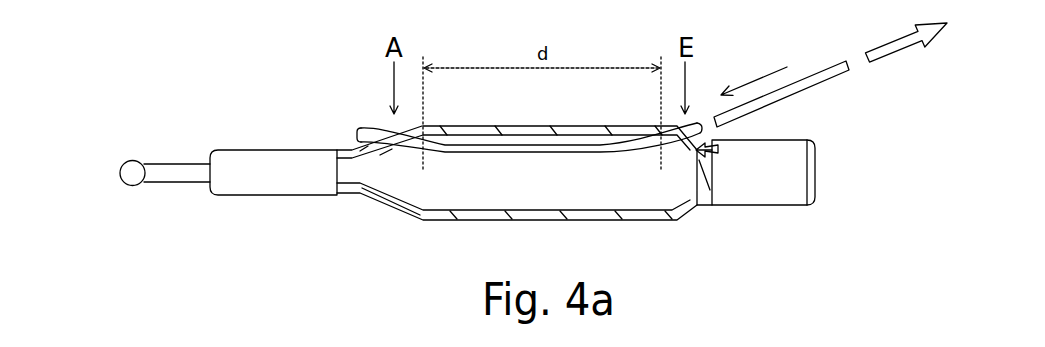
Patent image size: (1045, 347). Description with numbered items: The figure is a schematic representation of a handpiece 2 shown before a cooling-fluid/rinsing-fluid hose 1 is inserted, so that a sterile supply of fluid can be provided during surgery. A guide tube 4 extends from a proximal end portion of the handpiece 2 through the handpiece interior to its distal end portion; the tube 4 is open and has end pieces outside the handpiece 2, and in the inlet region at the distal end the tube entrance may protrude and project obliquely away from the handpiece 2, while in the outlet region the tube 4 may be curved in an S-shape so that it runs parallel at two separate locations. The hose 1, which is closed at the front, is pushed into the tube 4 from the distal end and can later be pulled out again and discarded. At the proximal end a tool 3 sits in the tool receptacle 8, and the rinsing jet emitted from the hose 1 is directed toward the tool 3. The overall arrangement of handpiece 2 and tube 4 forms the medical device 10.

The cooling and/or rinsing-fluid hose 1 is at (820, 80).
The handpiece 2 is at (760, 188).
The tool 3 is at (136, 166).
The guide tube 4 is at (372, 138).
The tool receptacle 8 is at (199, 156).
The instrument 10 is at (87, 147).